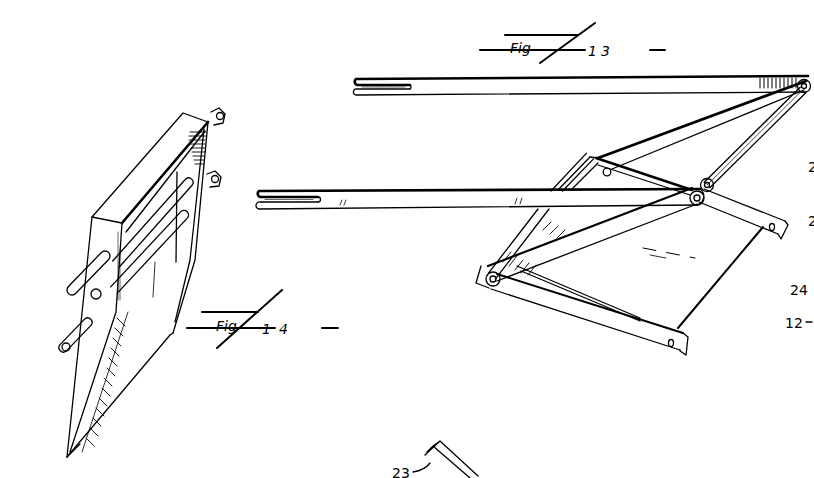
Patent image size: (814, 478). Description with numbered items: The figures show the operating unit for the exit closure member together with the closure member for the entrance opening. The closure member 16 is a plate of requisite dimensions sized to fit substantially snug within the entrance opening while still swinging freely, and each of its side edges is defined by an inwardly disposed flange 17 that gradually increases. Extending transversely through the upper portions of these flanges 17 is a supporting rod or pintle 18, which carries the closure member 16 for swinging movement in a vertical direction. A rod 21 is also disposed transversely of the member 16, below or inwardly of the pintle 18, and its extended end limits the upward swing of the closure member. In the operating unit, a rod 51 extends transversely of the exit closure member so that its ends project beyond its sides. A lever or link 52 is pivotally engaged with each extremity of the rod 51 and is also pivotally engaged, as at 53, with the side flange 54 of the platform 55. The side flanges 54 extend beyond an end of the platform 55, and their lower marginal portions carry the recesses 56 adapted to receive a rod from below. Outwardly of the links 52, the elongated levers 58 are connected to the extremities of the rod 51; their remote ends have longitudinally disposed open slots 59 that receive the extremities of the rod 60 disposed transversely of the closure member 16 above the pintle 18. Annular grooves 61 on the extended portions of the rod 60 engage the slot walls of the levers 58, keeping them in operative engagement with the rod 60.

In FIG. 14, the closure member 16 is at (122, 183).
In FIG. 14, the inwardly disposed flange 17 is at (183, 253).
In FIG. 14, the supporting rod or pintle 18 is at (180, 198).
In FIG. 14, the rod 21 is at (157, 252).
In FIG. 13, the rod 51 is at (746, 150).
In FIG. 13, the lever or link 52 is at (697, 132).
In FIG. 13, the pivot 53 is at (608, 168).
In FIG. 13, the side flange 54 is at (605, 312).
In FIG. 13, the platform 55 is at (712, 280).
In FIG. 13, the recess 56 is at (771, 232).
In FIG. 13, the elongated lever 58 is at (555, 88).
In FIG. 13, the open slot 59 is at (373, 90).
In FIG. 14, the rod 60 is at (185, 160).
In FIG. 13, the annular groove 61 is at (812, 131).
In FIG. 14, the annular groove 61 is at (213, 110).